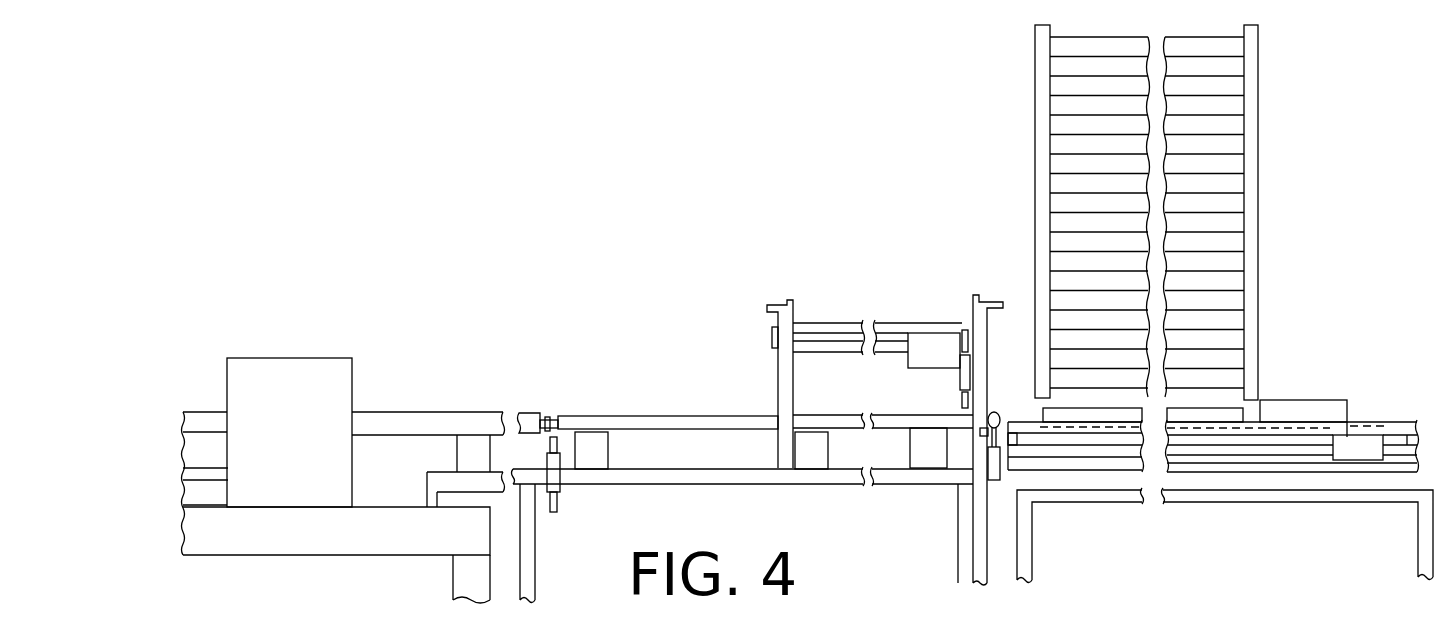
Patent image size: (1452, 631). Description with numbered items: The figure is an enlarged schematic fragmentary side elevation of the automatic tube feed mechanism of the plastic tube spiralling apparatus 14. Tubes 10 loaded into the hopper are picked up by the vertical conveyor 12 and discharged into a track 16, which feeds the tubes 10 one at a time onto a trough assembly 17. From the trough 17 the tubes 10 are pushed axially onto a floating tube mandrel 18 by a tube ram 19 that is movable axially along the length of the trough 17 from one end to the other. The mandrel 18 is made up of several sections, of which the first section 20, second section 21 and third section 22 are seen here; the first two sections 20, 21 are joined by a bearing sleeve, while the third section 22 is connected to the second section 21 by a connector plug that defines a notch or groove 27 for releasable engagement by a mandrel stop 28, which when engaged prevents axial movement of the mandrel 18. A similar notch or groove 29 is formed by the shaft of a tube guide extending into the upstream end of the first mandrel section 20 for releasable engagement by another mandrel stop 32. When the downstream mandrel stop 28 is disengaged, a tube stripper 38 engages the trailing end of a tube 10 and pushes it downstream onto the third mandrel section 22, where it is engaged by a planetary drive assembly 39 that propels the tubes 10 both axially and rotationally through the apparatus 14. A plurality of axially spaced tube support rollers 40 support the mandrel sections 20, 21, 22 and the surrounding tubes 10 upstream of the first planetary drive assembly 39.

The tubes 10 is at (433, 420).
The vertical conveyor 12 is at (1265, 117).
The plastic tube spiralling machine/apparatus 14 is at (657, 313).
The track 16 is at (1248, 303).
The trough assembly 17 is at (1250, 430).
The floating tube mandrel 18 is at (727, 405).
The tube ram 19 is at (1332, 410).
The first mandrel section 20 is at (898, 413).
The second mandrel section 21 is at (672, 418).
The third mandrel section 22 is at (546, 417).
The notch or groove 27 is at (552, 418).
The mandrel stop 28 is at (560, 443).
The notch or groove 29 is at (997, 413).
The mandrel stop 32 is at (985, 435).
The tube stripper 38 is at (960, 400).
The planetary drive assembly 39 is at (313, 370).
The tube support rollers 40 is at (598, 453).